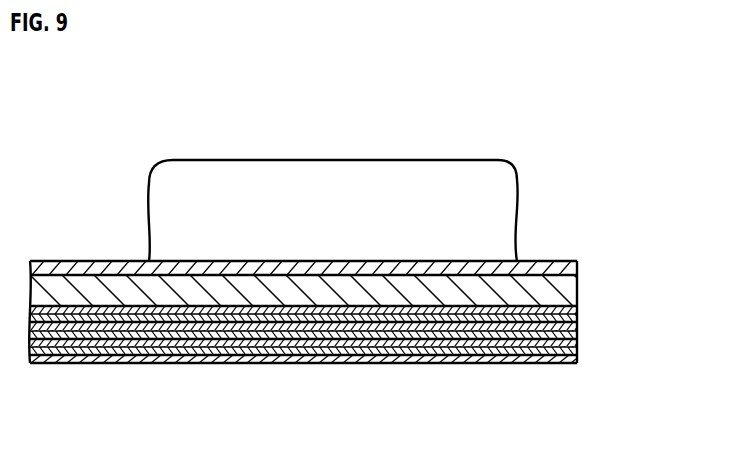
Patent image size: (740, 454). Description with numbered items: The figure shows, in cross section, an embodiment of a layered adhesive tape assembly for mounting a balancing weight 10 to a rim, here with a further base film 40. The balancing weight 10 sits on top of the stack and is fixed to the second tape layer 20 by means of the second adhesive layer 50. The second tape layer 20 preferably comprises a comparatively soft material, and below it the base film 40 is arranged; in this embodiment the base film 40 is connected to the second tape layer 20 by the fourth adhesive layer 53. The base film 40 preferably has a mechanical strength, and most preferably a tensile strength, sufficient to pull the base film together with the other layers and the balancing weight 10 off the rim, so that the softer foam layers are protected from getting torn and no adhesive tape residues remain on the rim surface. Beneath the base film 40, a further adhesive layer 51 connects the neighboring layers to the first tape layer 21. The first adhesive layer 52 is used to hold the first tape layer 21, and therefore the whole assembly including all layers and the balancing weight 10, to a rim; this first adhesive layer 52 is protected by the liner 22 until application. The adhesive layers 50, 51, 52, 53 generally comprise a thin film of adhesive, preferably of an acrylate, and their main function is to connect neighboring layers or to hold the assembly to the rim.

The balancing weight 10 is at (348, 181).
The second tape layer 20 is at (565, 291).
The first tape layer 21 is at (578, 352).
The liner 22 is at (545, 364).
The base film 40 is at (578, 329).
The second adhesive layer 50 is at (549, 262).
The adhesive layer 51 is at (578, 346).
The first adhesive layer 52 is at (578, 358).
The fourth adhesive layer 53 is at (578, 313).